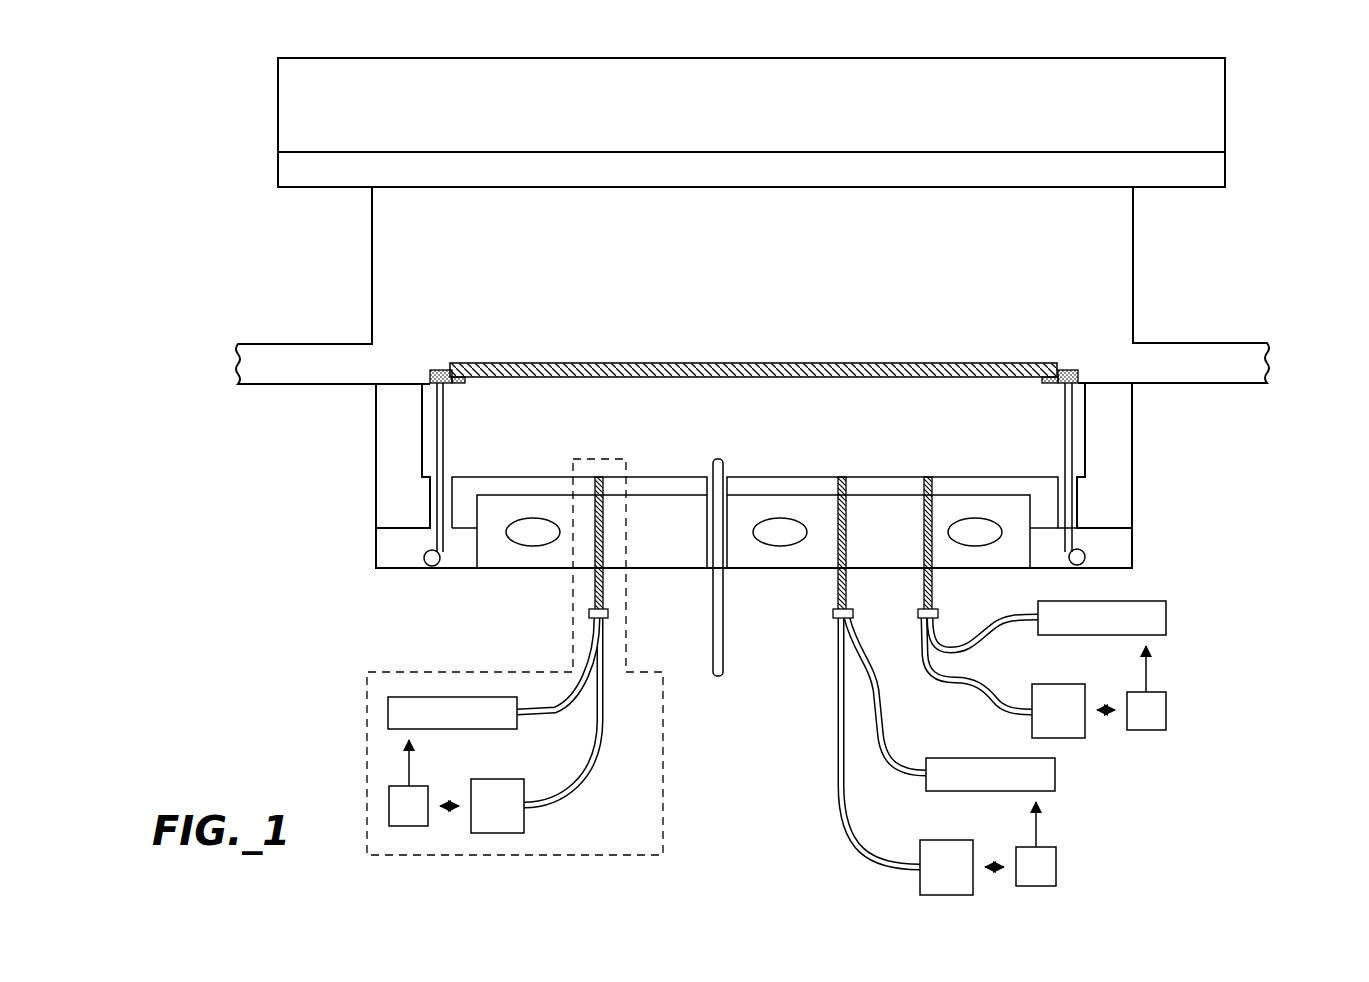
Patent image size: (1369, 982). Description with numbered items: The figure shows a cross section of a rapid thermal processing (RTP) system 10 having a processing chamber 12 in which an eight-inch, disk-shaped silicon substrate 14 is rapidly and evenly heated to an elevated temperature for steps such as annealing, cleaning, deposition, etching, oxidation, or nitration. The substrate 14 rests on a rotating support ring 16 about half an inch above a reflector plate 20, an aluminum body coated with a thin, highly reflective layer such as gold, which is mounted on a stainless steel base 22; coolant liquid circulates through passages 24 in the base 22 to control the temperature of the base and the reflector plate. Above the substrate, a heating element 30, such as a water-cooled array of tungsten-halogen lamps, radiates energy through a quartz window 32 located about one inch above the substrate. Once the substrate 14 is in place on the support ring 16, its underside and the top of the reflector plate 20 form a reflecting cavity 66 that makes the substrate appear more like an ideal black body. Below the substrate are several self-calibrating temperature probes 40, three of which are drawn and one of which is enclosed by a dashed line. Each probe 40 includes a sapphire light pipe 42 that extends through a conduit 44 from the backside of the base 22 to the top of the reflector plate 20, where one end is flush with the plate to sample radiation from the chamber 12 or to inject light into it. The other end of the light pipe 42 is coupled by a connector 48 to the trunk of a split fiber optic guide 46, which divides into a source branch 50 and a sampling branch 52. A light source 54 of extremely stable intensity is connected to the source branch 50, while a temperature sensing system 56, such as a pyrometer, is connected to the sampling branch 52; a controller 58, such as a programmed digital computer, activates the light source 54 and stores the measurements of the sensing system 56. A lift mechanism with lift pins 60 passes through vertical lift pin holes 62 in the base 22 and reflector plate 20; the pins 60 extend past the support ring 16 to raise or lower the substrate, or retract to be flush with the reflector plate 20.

The RTP system 10 is at (230, 140).
The processing chamber 12 is at (768, 281).
The silicon substrate 14 is at (880, 360).
The rotating support ring 16 is at (1065, 373).
The reflector plate 20 is at (877, 485).
The base 22 is at (820, 557).
The passages 24 is at (782, 545).
The heating element 30 is at (1217, 128).
The quartz window 32 is at (1217, 170).
The self-calibrating temperature probe 40 is at (360, 780).
The sapphire light pipe 42 is at (594, 600).
The conduit 44 is at (604, 555).
The split fiber optic guide 46 is at (612, 757).
The connector 48 is at (589, 614).
The source branch 50 is at (530, 715).
The sampling branch 52 is at (557, 806).
The light source 54 is at (447, 722).
The temperature sensing system 56 is at (492, 824).
The controller 58 is at (398, 816).
The lift pins 60 is at (723, 643).
The lift pin holes 62 is at (705, 545).
The reflecting cavity 66 is at (766, 440).